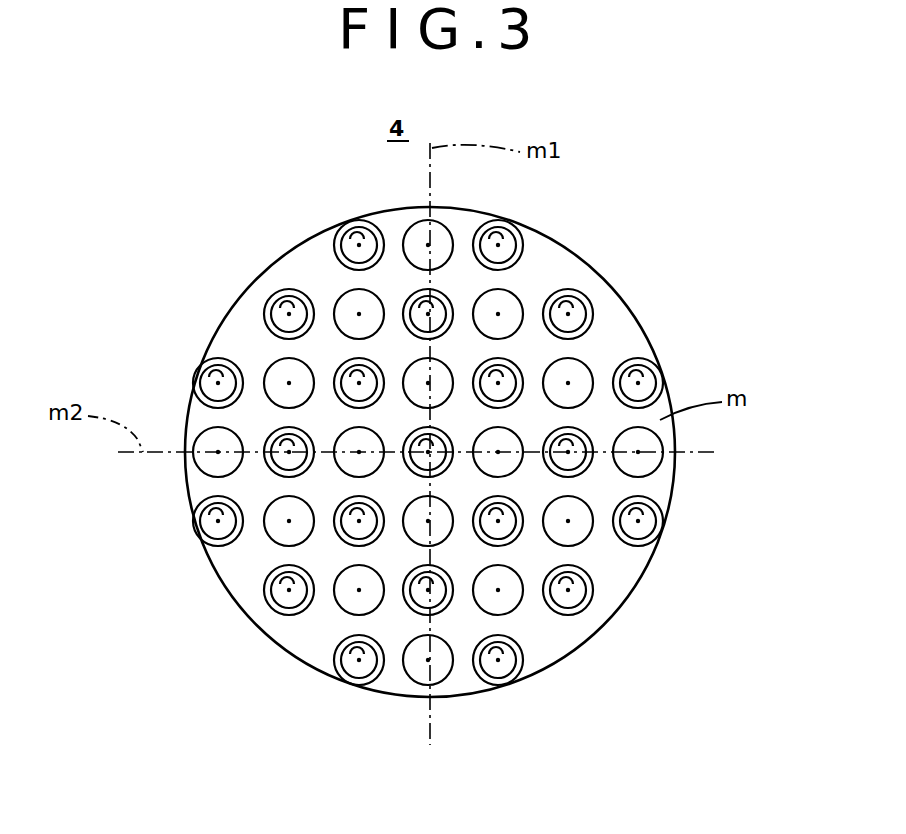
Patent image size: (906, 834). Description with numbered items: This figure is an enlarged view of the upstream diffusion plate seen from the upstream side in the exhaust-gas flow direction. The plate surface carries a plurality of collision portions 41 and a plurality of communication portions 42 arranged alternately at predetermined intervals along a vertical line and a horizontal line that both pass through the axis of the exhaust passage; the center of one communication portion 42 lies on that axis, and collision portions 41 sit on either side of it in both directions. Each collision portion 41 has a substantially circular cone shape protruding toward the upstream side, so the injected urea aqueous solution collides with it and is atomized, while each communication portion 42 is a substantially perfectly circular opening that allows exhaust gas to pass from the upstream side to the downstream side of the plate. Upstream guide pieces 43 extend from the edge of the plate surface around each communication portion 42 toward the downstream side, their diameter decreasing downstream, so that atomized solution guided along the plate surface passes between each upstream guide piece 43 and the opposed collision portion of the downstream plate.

The collision portion 41 is at (440, 240).
The communication portion 42 is at (500, 238).
The upstream guide piece 43 is at (500, 236).